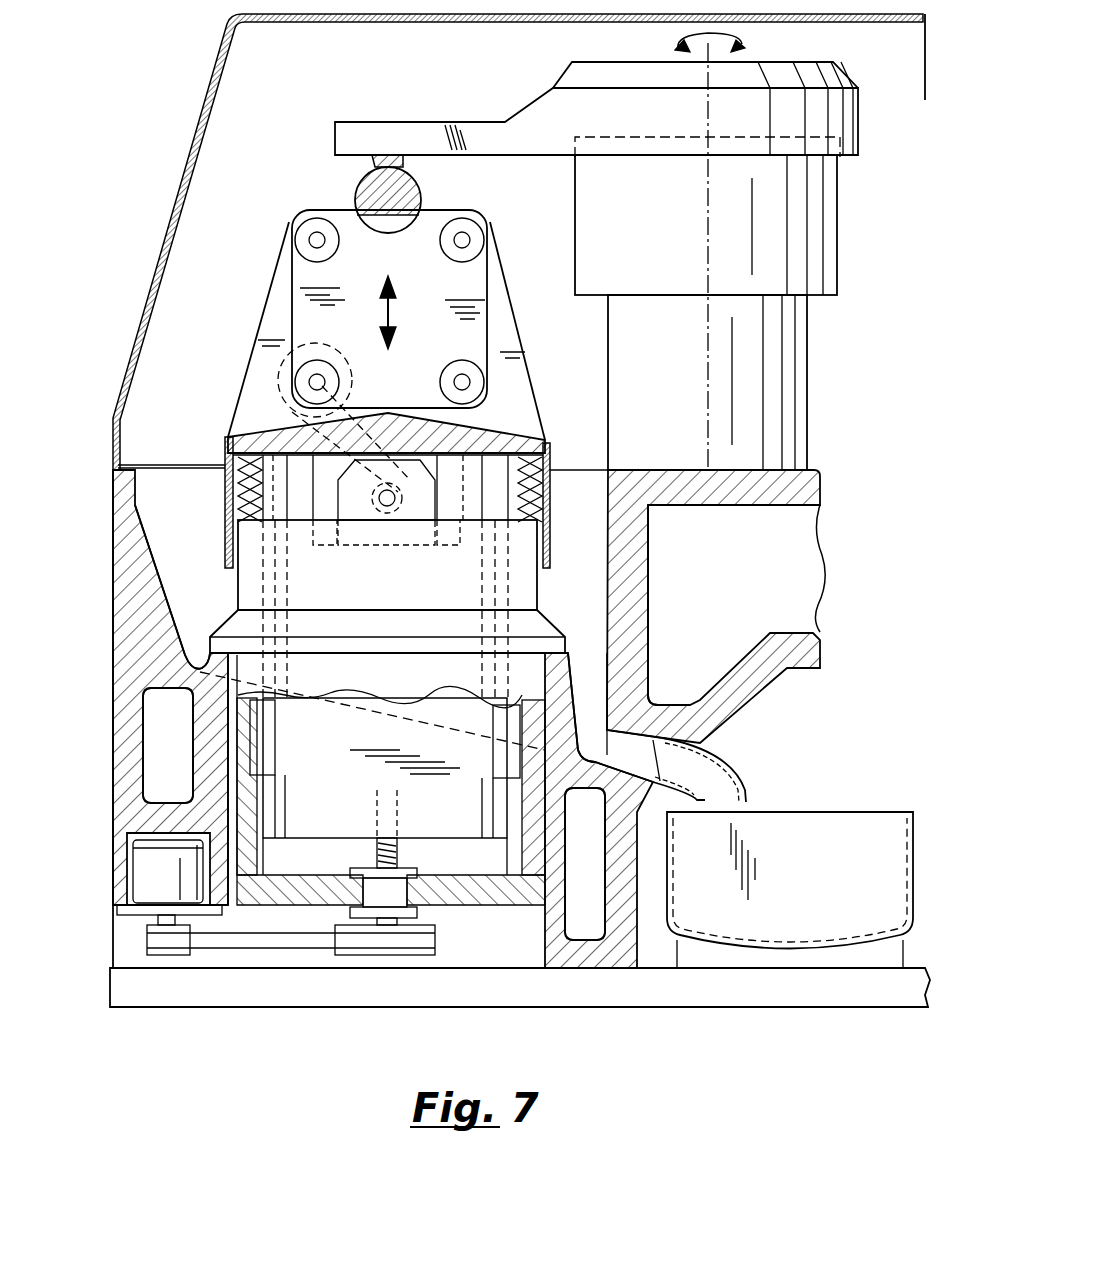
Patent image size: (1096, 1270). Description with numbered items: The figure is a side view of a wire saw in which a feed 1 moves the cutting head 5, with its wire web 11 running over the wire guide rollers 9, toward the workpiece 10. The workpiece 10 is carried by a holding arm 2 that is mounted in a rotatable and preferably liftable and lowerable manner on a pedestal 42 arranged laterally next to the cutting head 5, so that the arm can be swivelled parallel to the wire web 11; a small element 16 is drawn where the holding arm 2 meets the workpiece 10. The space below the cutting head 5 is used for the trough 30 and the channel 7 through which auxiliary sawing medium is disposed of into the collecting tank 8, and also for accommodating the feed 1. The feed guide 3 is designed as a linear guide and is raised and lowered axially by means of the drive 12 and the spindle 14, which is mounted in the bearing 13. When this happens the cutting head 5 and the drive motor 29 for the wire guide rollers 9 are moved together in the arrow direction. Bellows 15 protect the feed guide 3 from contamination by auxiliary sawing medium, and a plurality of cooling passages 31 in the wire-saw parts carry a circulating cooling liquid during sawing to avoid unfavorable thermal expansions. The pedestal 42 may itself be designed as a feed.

The feed 1 is at (240, 544).
The holding arm 2 is at (420, 130).
The feed guide 3 is at (275, 750).
The cutting head 5 is at (378, 301).
The channel 7 is at (725, 772).
The collecting tank 8 is at (820, 826).
The wire guide rollers 9 is at (300, 250).
The workpiece 10 is at (356, 184).
The wire web 11 is at (425, 212).
The drive 12 is at (170, 942).
The bearing 13 is at (415, 905).
The spindle 14 is at (400, 848).
The bellows 15 is at (240, 490).
The pin 16 is at (385, 158).
The drive motor 29 is at (412, 510).
The trough 30 is at (165, 628).
The cooling passages 31 is at (160, 755).
The pedestal 42 is at (792, 386).